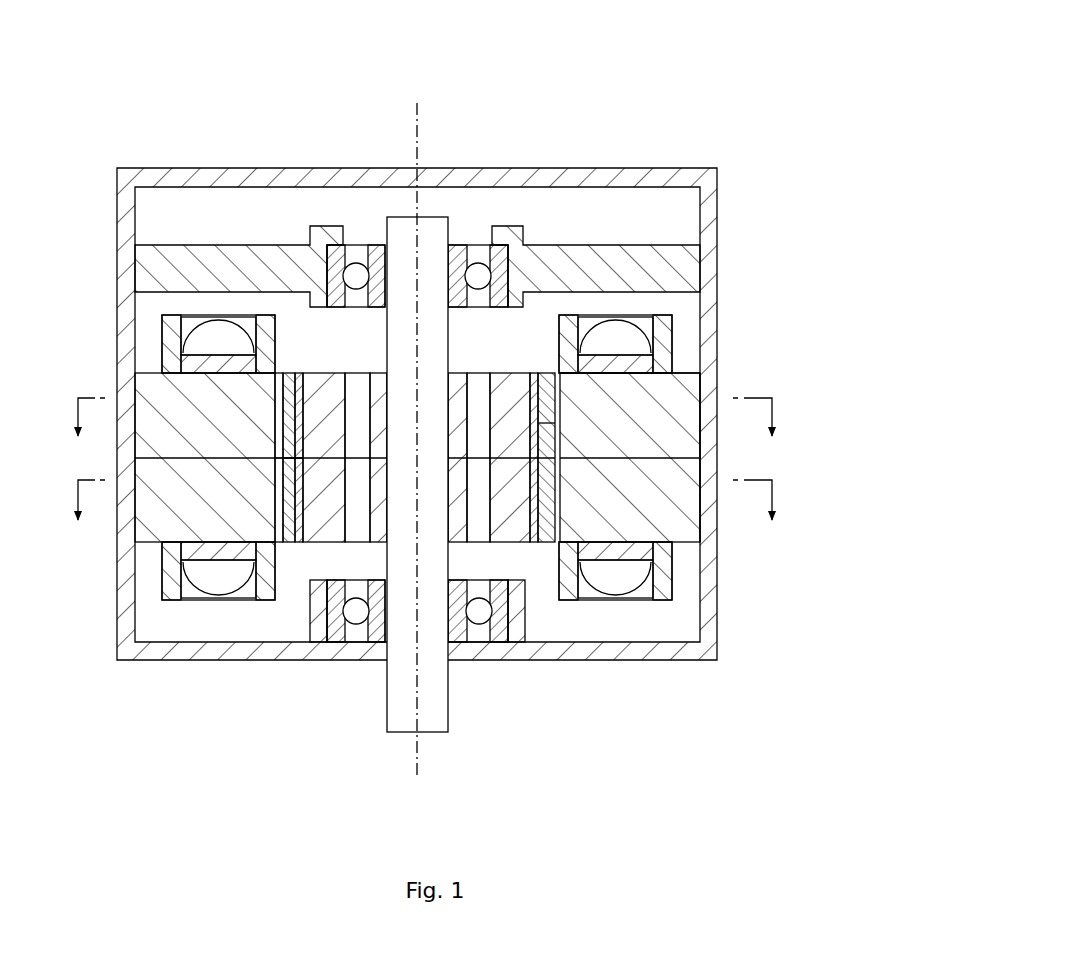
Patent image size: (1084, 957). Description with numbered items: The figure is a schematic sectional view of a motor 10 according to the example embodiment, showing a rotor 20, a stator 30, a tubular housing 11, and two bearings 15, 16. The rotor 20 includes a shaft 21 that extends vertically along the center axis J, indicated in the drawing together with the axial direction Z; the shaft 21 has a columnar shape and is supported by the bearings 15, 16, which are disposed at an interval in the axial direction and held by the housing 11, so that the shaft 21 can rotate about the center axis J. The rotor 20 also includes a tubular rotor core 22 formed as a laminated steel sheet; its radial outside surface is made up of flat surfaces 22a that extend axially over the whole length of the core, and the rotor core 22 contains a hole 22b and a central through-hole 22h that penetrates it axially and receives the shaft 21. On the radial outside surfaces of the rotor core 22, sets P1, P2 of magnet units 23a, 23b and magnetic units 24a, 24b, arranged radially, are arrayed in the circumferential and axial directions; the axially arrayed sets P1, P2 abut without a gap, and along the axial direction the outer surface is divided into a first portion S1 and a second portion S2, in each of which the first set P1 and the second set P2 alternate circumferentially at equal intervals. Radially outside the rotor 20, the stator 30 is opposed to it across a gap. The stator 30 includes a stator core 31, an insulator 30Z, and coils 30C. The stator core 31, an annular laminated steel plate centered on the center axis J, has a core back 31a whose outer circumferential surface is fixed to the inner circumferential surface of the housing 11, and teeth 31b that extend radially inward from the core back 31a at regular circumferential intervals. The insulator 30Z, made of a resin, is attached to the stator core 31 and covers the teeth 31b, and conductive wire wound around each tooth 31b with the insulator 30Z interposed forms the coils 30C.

The motor 10 is at (672, 73).
The housing 11 is at (664, 168).
The bearing 15 is at (357, 272).
The bearing 16 is at (356, 616).
The rotor 20 is at (471, 445).
The shaft 21 is at (434, 712).
The rotor core 22 is at (527, 572).
The flat surface 22a is at (549, 424).
The hole 22b is at (348, 514).
The through-hole 22h is at (388, 520).
The magnet unit 23a is at (297, 407).
The magnet unit 23b is at (290, 538).
The magnetic unit 24a is at (298, 538).
The magnetic unit 24b is at (287, 408).
The stator 30 is at (482, 420).
The coil 30C is at (630, 332).
The insulator 30Z is at (668, 322).
The stator core 31 is at (459, 349).
The core back 31a is at (700, 393).
The tooth 31b is at (607, 388).
The first portion S1 is at (275, 413).
The second portion S2 is at (272, 490).
The first set P1 is at (323, 117).
The second set P2 is at (170, 729).
The center axis J is at (420, 130).
The axial direction Z is at (108, 810).